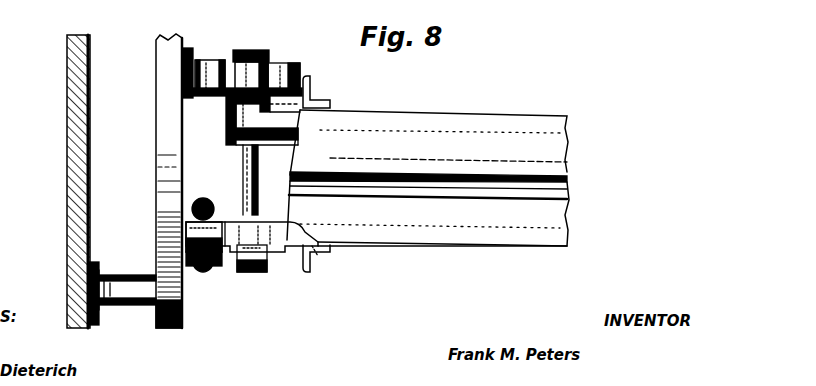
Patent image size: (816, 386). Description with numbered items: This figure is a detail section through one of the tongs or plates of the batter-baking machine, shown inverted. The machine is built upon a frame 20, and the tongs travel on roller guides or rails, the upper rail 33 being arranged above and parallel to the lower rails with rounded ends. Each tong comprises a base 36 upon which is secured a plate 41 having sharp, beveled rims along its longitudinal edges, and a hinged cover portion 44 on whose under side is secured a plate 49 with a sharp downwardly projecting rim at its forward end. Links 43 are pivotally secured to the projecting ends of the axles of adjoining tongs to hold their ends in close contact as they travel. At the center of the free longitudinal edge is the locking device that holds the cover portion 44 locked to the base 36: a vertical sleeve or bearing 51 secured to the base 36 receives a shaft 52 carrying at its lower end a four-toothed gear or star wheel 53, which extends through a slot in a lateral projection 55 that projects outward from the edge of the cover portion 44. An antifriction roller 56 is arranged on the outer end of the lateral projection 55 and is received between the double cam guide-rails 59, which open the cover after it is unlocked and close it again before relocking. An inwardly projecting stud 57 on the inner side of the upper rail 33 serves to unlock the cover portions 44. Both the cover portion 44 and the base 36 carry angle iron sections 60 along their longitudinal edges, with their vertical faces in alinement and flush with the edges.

The frame 20 is at (66, 212).
The upper roller guide or rail 33 is at (165, 97).
The base 36 is at (429, 142).
The plate 41 is at (568, 165).
The link 43 is at (139, 0).
The cover portion 44 is at (428, 213).
The plate 49 is at (568, 197).
The vertical sleeve or bearing 51 is at (230, 118).
The shaft 52 is at (240, 170).
The four-toothed gear or star wheel 53 is at (277, 66).
The lateral projection 55 is at (262, 230).
The antifriction roller 56 is at (222, 270).
The stud 57 is at (200, 57).
The double cam guide-rail 59 is at (157, 192).
The angle iron section 60 is at (312, 90).